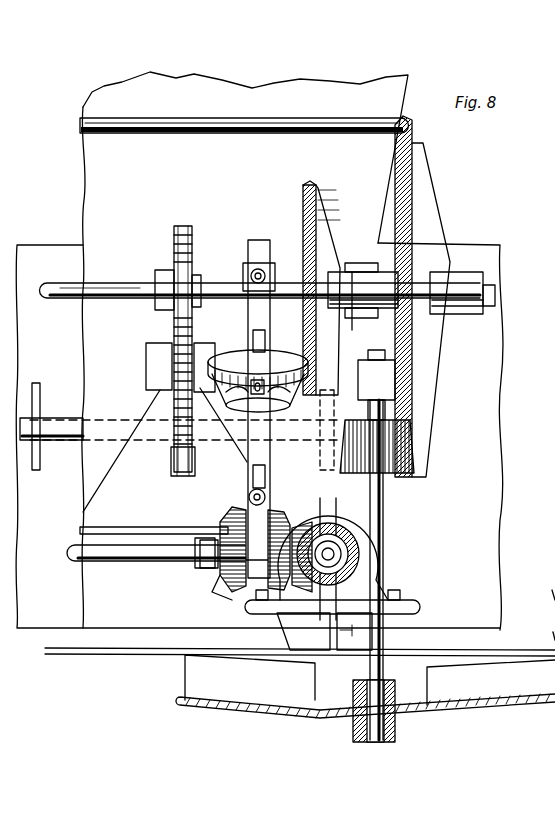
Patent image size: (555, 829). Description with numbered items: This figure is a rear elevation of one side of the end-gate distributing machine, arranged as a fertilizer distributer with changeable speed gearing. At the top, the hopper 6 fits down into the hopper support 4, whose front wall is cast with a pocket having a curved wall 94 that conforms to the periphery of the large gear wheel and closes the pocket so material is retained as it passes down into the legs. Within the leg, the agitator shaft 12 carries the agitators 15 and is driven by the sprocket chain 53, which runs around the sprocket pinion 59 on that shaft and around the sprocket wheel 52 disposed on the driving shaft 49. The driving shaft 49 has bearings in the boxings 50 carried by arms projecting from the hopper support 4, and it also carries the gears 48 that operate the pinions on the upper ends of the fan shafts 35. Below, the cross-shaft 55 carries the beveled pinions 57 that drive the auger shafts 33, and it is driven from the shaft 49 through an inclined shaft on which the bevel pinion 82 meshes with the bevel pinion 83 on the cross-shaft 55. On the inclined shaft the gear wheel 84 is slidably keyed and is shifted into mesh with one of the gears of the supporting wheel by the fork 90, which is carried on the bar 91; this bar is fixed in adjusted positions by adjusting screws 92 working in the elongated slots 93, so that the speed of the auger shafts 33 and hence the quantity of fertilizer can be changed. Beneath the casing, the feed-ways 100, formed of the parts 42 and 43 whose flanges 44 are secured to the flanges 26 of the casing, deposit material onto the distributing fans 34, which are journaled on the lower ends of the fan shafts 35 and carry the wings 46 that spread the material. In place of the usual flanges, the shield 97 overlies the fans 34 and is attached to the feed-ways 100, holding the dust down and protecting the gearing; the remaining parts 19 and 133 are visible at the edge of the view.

The hopper support 4 is at (259, 351).
The hopper 6 is at (244, 113).
The agitator shaft 12 is at (56, 442).
The agitators 15 is at (40, 398).
The frame part 19 is at (546, 626).
The flanges 26 is at (420, 607).
The auger shafts 33 is at (541, 583).
The distributing fans 34 is at (500, 712).
The fan shafts 35 is at (390, 355).
The feed-way part 42 is at (303, 631).
The feed-way part 43 is at (354, 631).
The flanges 44 is at (400, 618).
The wings 46 is at (491, 682).
The gears 48 is at (412, 378).
The driving shaft 49 is at (120, 290).
The boxings 50 is at (392, 296).
The sprocket wheel 52 is at (185, 258).
The sprocket chain 53 is at (180, 328).
The cross-shaft 55 is at (146, 548).
The beveled pinions 57 is at (340, 530).
The sprocket pinion 59 is at (178, 458).
The bevel pinion 82 is at (225, 515).
The bevel pinion 83 is at (222, 578).
The gear wheel 84 is at (236, 352).
The fork 90 is at (302, 398).
The bar 91 is at (258, 450).
The adjusting screws 92 is at (268, 497).
The elongated slots 93 is at (360, 566).
The curved wall 94 is at (336, 222).
The shield 97 is at (394, 655).
The feed-ways 100 is at (290, 655).
The gear shaft 133 is at (335, 552).